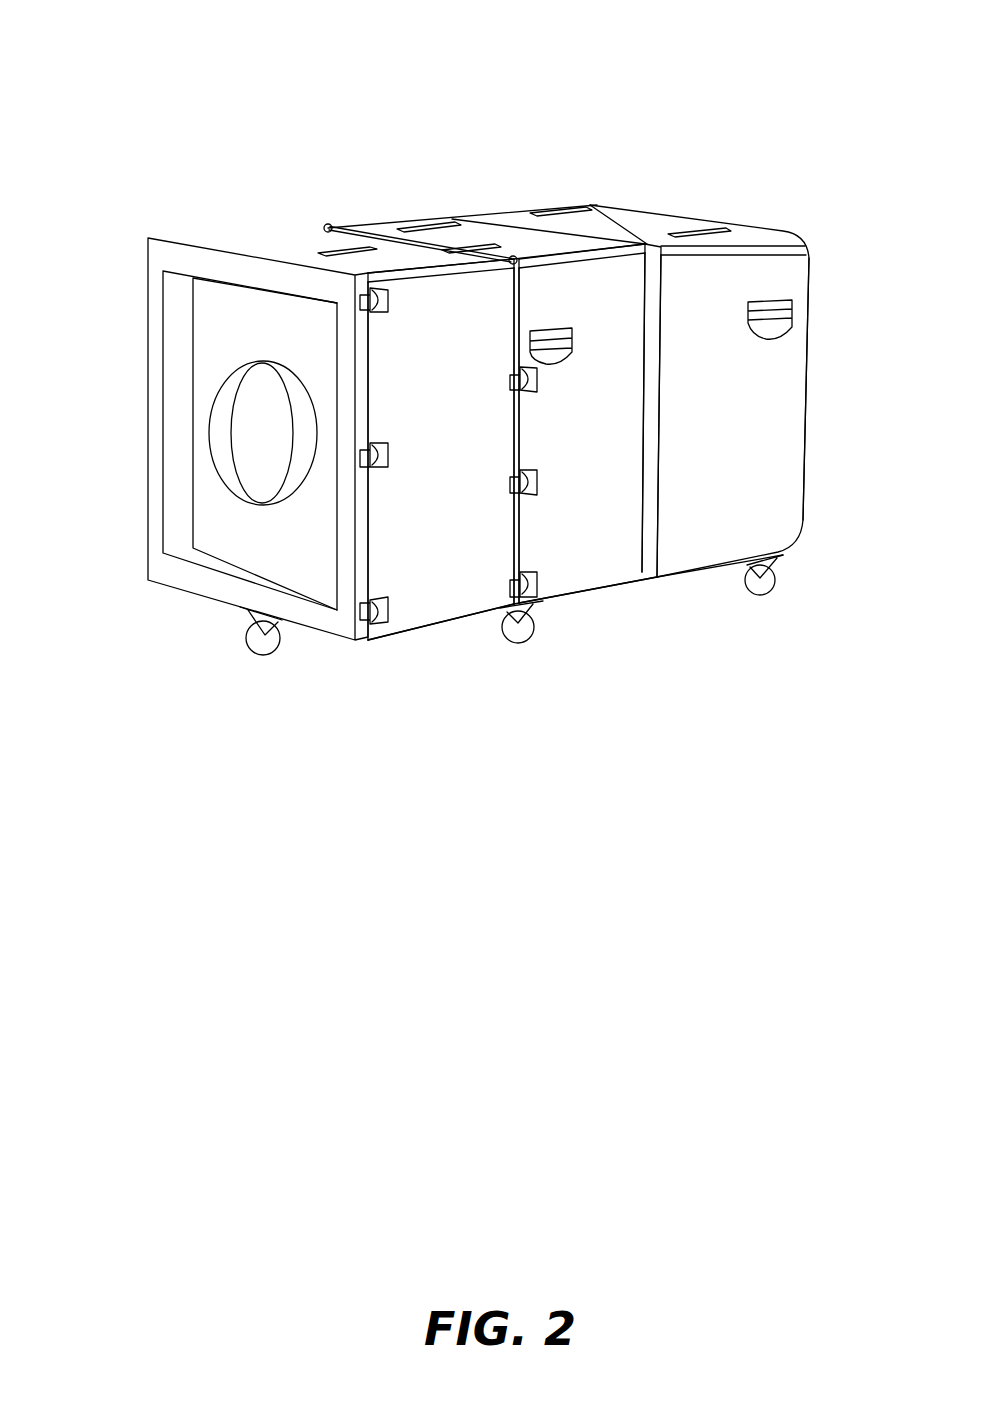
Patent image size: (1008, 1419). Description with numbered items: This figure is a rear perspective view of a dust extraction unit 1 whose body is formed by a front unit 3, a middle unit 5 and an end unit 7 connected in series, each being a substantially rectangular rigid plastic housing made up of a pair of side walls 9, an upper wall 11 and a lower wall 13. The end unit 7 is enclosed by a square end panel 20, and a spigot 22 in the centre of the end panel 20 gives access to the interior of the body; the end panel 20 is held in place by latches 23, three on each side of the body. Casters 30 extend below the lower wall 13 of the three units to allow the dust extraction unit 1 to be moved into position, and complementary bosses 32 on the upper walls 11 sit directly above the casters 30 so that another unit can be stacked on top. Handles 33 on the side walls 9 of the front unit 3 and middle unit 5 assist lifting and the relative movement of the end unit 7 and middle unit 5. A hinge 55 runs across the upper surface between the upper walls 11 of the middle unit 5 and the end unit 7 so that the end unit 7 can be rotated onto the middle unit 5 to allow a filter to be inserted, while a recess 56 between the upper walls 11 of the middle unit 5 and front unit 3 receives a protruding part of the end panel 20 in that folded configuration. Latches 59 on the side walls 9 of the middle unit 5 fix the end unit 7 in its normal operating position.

The dust extraction unit 1 is at (185, 78).
The front unit 3 is at (699, 351).
The middle unit 5 is at (556, 349).
The end unit 7 is at (343, 406).
The side walls 9 is at (604, 492).
The upper wall 11 is at (523, 175).
The lower wall 13 is at (575, 626).
The end panel 20 is at (212, 439).
The spigot 22 is at (206, 461).
The latches 23 is at (410, 456).
The casters 30 is at (537, 650).
The complementary bosses 32 is at (510, 157).
The handles 33 is at (696, 309).
The hinge 55 is at (406, 163).
The recess 56 is at (420, 150).
The latches 59 is at (565, 482).